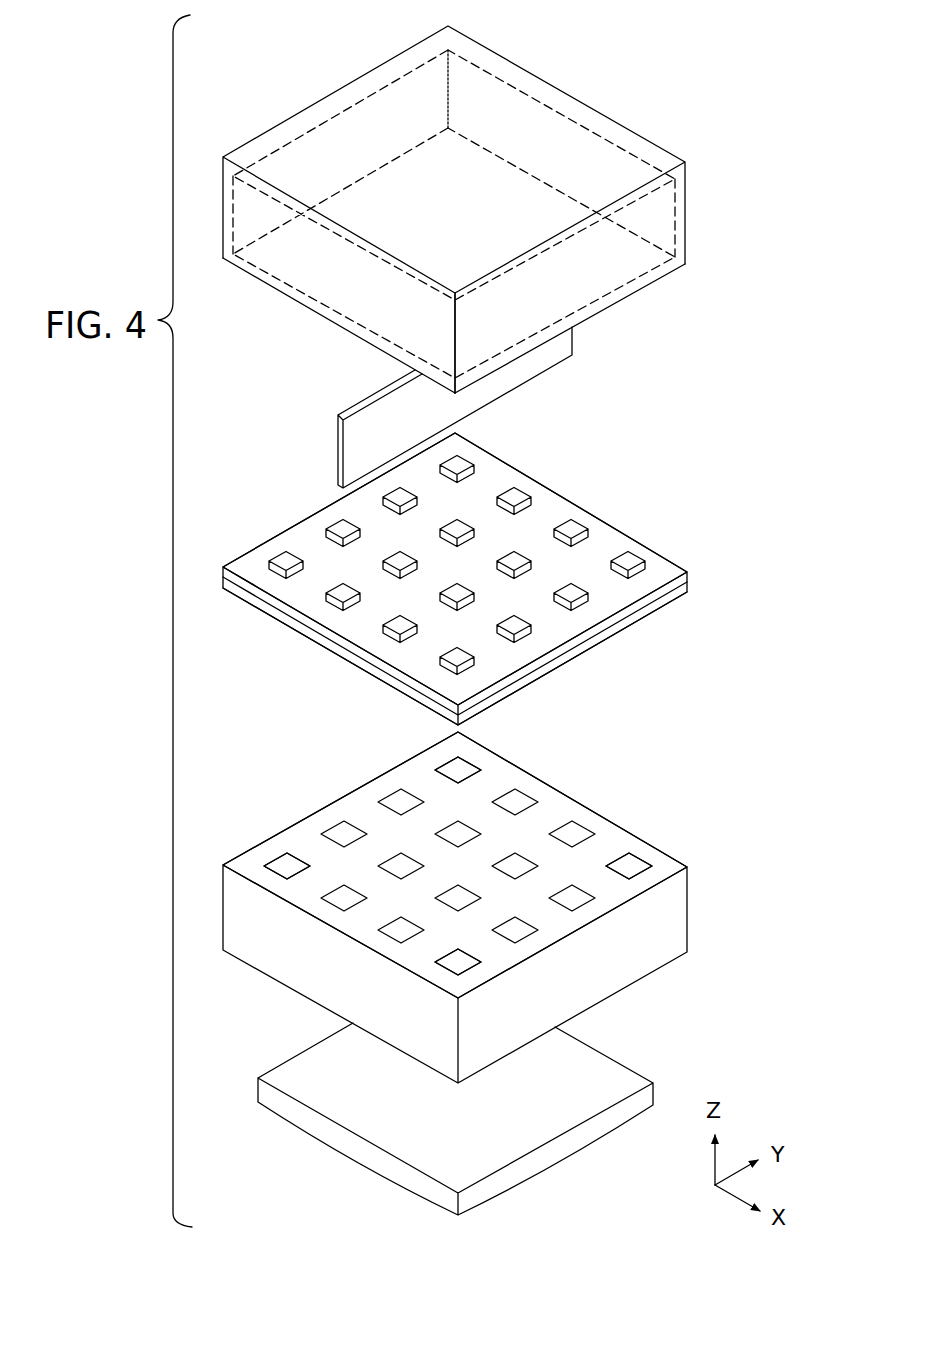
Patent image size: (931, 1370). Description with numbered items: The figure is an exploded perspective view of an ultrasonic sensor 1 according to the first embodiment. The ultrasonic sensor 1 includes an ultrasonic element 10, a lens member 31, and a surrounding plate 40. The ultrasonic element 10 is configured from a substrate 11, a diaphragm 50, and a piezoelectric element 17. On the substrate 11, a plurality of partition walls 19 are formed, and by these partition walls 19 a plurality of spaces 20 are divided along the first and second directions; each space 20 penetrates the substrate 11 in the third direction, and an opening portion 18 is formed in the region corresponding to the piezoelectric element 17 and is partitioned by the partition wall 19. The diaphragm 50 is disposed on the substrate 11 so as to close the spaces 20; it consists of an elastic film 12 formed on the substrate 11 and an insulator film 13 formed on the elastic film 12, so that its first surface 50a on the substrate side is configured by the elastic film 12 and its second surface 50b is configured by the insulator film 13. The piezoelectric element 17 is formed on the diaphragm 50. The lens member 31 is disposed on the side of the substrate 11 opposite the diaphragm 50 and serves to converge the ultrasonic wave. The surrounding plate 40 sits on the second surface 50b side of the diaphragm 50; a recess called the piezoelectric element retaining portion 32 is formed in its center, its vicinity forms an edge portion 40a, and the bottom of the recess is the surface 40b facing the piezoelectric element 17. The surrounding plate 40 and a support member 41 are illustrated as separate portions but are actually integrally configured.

The ultrasonic sensor 1 is at (638, 71).
The surrounding plate 40 is at (687, 203).
The edge portion 40a is at (657, 283).
The surface of the piezoelectric element side of the surrounding plate 40b is at (318, 278).
The piezoelectric element retaining portion 32 is at (566, 292).
The support member 41 is at (573, 357).
The ultrasonic element 10 is at (786, 550).
The diaphragm 50 is at (751, 540).
The insulator film 13 is at (689, 570).
The elastic film 12 is at (690, 583).
The second surface 50b is at (676, 566).
The first surface 50a is at (676, 604).
The piezoelectric element 17 is at (530, 484).
The substrate 11 is at (688, 923).
The partition wall 19 is at (600, 853).
The space 20 is at (592, 823).
The opening portion 18 is at (471, 866).
The lens member 31 is at (654, 1092).